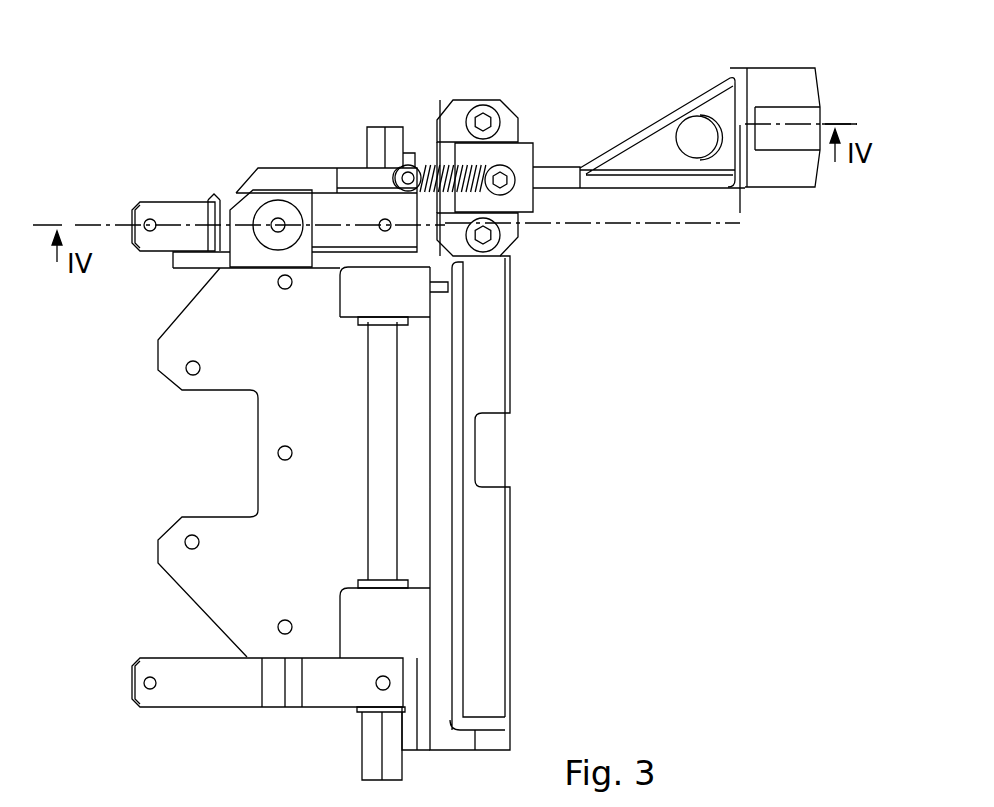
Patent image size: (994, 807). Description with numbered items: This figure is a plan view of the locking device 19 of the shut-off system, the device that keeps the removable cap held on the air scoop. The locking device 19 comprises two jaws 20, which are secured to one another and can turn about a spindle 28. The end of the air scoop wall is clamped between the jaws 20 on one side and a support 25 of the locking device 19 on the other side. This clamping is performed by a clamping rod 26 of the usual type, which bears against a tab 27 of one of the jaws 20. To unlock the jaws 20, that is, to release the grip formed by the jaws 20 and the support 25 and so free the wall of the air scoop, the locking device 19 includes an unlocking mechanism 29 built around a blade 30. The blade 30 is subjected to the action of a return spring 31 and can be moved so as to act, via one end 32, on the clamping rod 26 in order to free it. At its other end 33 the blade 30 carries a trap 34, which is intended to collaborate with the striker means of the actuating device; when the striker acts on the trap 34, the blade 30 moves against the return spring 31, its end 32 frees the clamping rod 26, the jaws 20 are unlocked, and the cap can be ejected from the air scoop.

The locking device 19 is at (562, 406).
The jaw 20 is at (355, 159).
The support 25 is at (503, 563).
The clamping rod 26 is at (262, 198).
The tab 27 is at (164, 202).
The spindle 28 is at (374, 478).
The unlocking mechanism 29 is at (548, 124).
The blade 30 is at (560, 186).
The return spring 31 is at (434, 168).
The end of the blade 32 is at (273, 148).
The other end of the blade 33 is at (688, 84).
The trap 34 is at (772, 182).